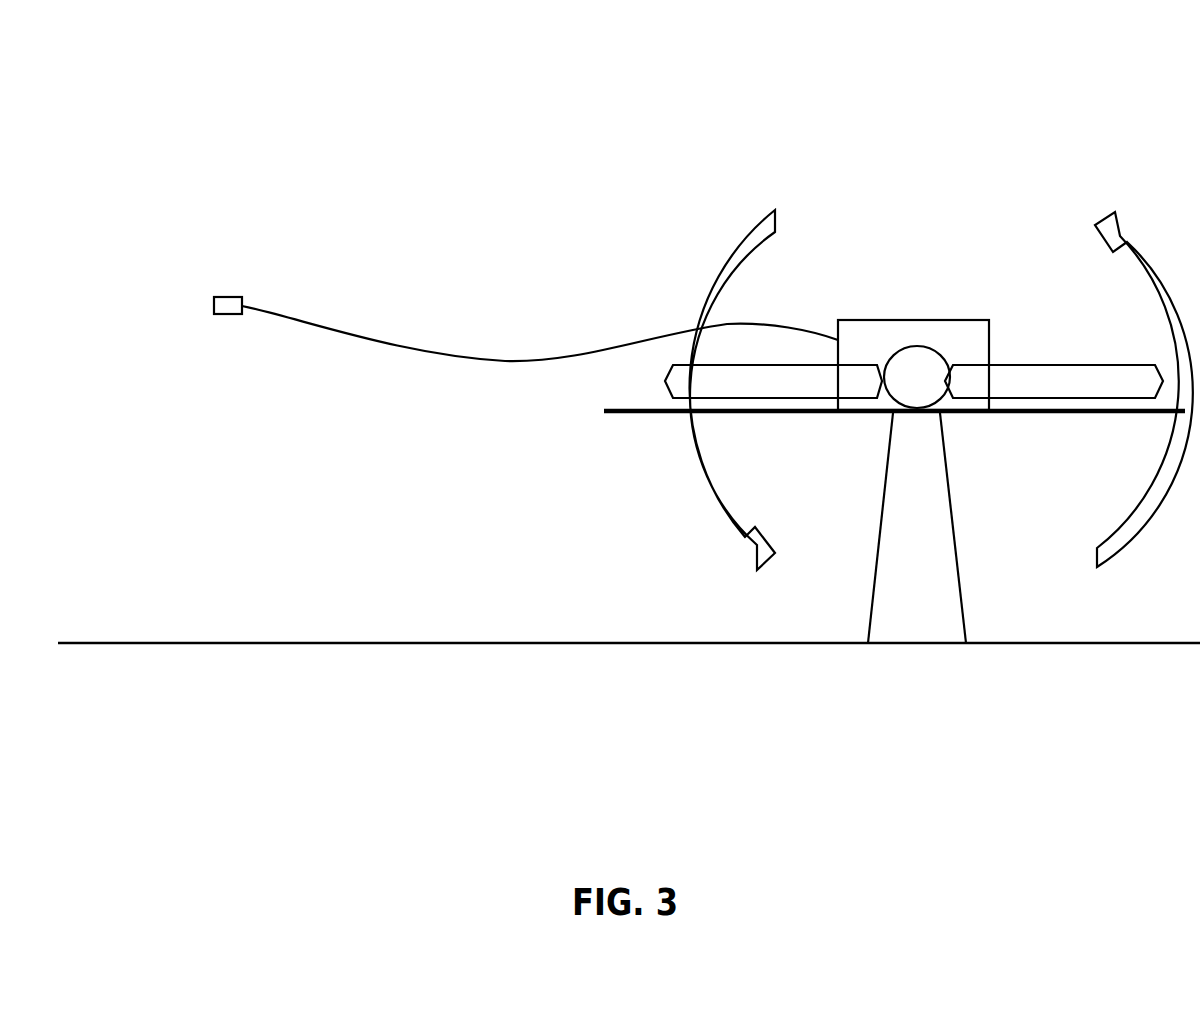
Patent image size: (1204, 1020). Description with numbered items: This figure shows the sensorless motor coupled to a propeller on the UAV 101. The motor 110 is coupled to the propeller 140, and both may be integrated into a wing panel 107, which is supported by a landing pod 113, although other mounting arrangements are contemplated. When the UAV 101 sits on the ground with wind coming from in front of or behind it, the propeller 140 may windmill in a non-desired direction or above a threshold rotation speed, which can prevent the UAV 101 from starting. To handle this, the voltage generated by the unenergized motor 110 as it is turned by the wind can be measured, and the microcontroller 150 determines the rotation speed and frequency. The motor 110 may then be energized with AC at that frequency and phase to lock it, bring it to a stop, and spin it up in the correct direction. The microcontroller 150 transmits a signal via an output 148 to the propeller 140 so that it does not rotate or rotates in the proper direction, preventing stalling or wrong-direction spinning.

The UAV 101 is at (1020, 97).
The motor 110 is at (910, 320).
The propeller 140 is at (1037, 362).
The wing panel 107 is at (790, 412).
The landing pod 113 is at (955, 538).
The output 148 is at (418, 348).
The microcontroller 150 is at (232, 314).